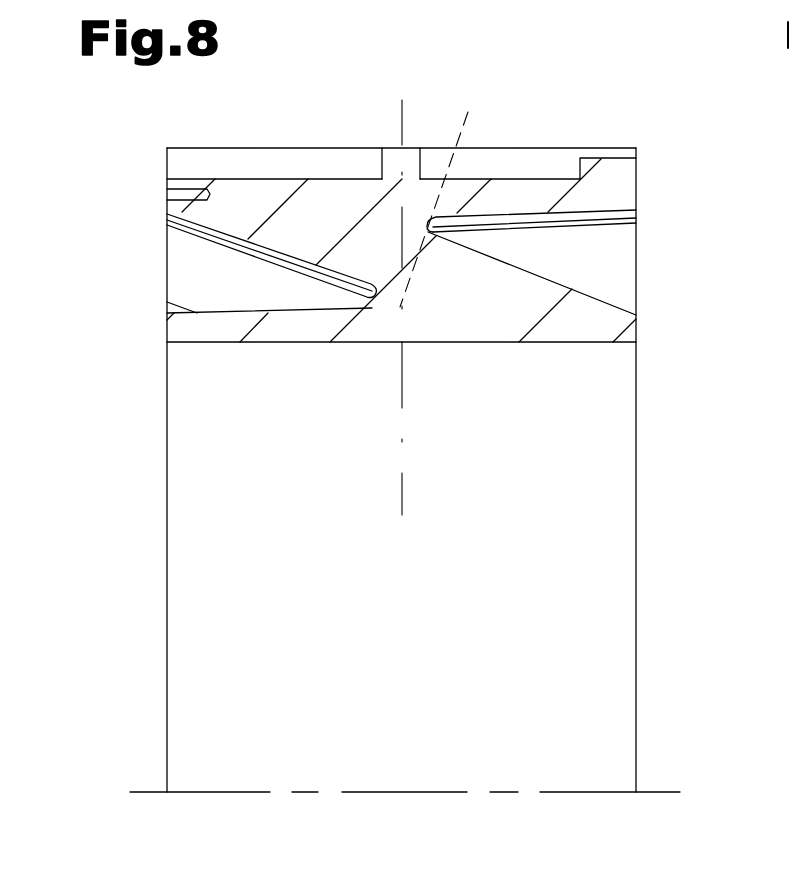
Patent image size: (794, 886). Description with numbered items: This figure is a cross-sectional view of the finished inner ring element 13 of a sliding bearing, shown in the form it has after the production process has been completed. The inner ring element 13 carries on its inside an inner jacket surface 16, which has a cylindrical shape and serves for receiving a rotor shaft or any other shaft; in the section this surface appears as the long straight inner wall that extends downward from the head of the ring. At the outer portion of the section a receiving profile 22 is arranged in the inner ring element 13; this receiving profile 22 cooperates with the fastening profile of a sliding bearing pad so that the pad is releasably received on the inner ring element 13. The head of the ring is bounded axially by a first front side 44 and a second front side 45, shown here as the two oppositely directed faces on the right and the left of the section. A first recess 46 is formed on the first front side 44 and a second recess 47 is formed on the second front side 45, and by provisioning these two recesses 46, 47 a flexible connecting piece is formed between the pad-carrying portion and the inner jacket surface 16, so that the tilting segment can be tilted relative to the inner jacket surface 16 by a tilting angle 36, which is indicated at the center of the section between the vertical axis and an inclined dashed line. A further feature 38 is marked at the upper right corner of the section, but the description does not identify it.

The inner ring element 13 is at (630, 128).
The inner jacket surface 16 is at (575, 342).
The receiving profile 22 is at (293, 150).
The tilting angle 36 is at (402, 118).
The step 38 is at (603, 162).
The first front side 44 is at (666, 212).
The second front side 45 is at (150, 301).
The first recess 46 is at (625, 263).
The second recess 47 is at (230, 272).